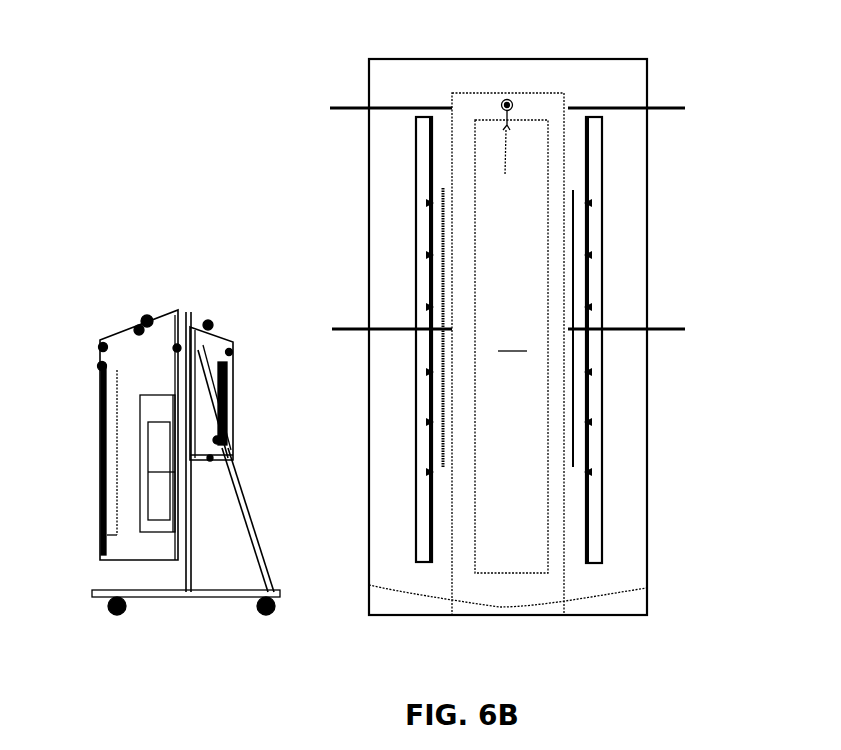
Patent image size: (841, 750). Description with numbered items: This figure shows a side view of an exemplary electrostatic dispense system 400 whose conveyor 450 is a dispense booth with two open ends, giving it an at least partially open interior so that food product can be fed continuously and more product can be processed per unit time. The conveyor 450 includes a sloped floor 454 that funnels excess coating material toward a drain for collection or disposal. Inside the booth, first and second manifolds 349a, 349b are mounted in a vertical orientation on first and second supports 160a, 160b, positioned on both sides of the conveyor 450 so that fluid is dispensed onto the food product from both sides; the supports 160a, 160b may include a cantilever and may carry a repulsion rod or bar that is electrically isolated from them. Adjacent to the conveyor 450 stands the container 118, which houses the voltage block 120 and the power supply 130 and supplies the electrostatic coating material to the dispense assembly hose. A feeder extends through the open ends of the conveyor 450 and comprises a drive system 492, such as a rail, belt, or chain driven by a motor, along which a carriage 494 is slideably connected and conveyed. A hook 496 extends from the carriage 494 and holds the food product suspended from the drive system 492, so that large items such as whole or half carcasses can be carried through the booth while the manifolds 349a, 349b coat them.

The container 118 is at (88, 424).
The voltage block 120 is at (140, 502).
The power supply 130 is at (218, 343).
The electrostatic dispense system 400 is at (700, 73).
The conveyor 450 is at (627, 165).
The sloped floor 454 is at (610, 590).
The drive system 492 is at (514, 104).
The carriage 494 is at (501, 104).
The hook 496 is at (504, 157).
The first manifold 349a is at (425, 231).
The second manifold 349b is at (590, 235).
The first support 160a is at (427, 400).
The second support 160b is at (575, 400).